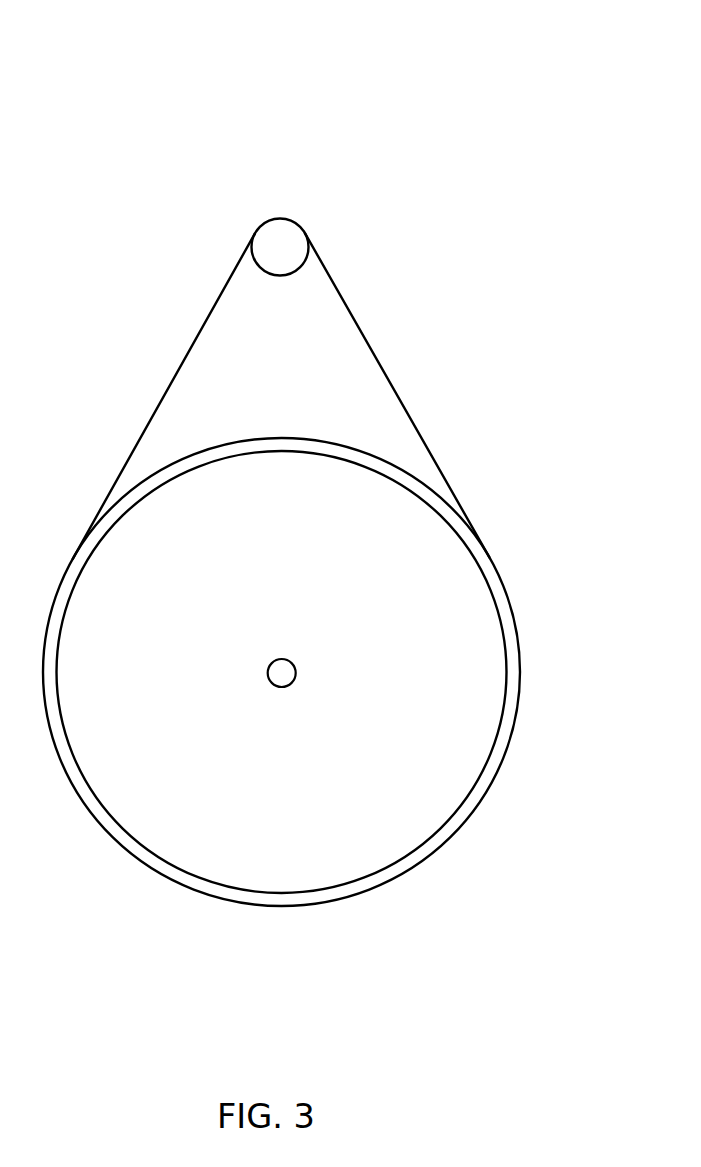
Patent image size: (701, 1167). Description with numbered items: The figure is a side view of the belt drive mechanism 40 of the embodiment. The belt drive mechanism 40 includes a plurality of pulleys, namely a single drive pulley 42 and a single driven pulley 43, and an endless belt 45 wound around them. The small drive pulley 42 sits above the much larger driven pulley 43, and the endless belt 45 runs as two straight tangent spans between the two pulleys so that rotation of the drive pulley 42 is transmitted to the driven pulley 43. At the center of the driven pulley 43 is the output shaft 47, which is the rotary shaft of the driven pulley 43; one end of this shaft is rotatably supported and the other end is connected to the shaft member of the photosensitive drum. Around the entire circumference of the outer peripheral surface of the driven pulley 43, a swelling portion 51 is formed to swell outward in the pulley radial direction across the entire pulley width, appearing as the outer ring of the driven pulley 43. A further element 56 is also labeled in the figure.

The belt drive mechanism 40 is at (273, 77).
The drive pulley 42 is at (279, 218).
The driven pulley 43 is at (473, 589).
The endless belt 45 is at (343, 305).
The output shaft 47 is at (281, 687).
The swelling portion 51 is at (468, 812).
The housing cover 56 is at (442, 154).